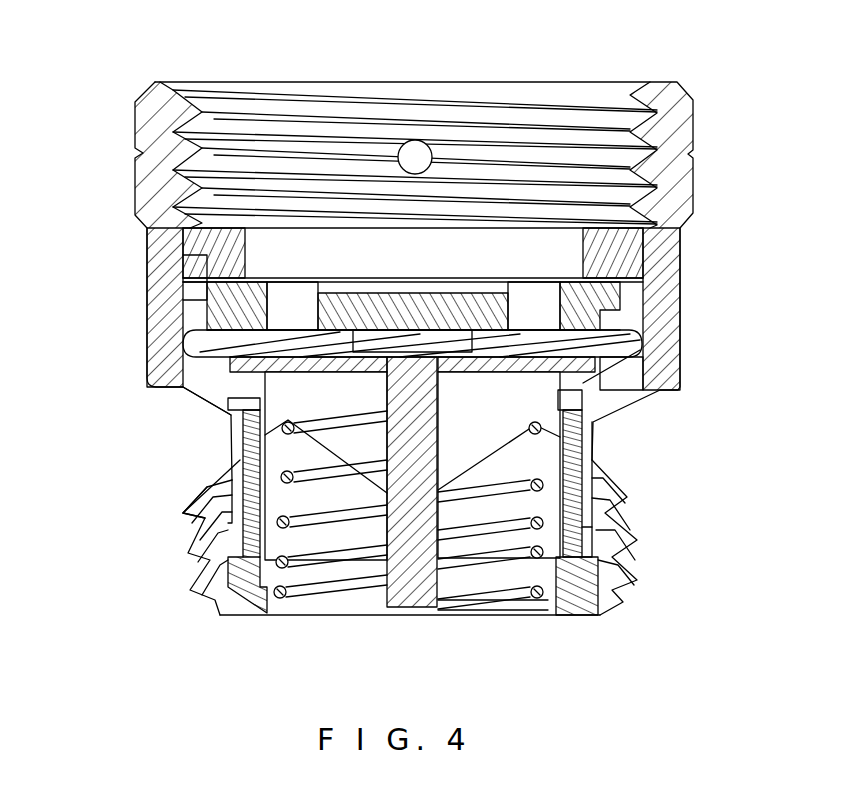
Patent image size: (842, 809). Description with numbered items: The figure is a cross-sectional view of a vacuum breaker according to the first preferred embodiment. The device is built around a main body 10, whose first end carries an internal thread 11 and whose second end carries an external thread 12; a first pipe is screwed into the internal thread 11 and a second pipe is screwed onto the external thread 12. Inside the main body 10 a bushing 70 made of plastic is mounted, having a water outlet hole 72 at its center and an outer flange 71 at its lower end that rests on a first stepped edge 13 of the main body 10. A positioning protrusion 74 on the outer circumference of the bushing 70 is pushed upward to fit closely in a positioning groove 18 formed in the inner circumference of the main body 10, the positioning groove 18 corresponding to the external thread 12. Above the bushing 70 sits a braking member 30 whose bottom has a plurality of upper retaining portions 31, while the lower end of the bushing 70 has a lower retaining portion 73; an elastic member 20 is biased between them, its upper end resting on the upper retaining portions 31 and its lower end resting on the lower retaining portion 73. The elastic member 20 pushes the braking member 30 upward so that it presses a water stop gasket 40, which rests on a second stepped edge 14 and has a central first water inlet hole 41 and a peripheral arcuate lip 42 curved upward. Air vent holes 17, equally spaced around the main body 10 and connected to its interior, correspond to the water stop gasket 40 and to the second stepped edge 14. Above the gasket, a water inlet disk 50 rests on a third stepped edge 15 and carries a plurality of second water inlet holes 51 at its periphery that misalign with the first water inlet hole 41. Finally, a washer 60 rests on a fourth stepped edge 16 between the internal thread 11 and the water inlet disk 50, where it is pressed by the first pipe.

The main body 10 is at (148, 135).
The internal thread 11 is at (427, 103).
The external thread 12 is at (197, 553).
The first stepped edge 13 is at (225, 598).
The second stepped edge 14 is at (183, 342).
The third stepped edge 15 is at (212, 300).
The fourth stepped edge 16 is at (195, 275).
The air vent holes 17 is at (203, 395).
The positioning groove 18 is at (210, 535).
The elastic member 20 is at (283, 478).
The braking member 30 is at (335, 372).
The upper retaining portions 31 is at (535, 423).
The water stop gasket 40 is at (335, 330).
The first water inlet hole 41 is at (430, 345).
The arcuate lip 42 is at (637, 343).
The water inlet disk 50 is at (613, 297).
The second water inlet holes 51 is at (292, 310).
The washer 60 is at (624, 246).
The bushing 70 is at (572, 445).
The outer flange 71 is at (590, 606).
The water outlet hole 72 is at (412, 607).
The lower retaining portion 73 is at (530, 598).
The positioning protrusion 74 is at (597, 550).